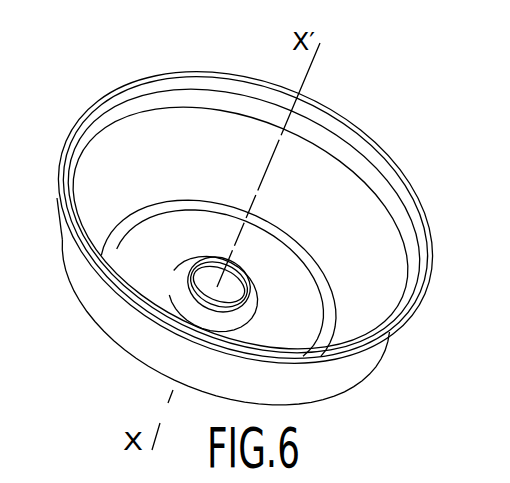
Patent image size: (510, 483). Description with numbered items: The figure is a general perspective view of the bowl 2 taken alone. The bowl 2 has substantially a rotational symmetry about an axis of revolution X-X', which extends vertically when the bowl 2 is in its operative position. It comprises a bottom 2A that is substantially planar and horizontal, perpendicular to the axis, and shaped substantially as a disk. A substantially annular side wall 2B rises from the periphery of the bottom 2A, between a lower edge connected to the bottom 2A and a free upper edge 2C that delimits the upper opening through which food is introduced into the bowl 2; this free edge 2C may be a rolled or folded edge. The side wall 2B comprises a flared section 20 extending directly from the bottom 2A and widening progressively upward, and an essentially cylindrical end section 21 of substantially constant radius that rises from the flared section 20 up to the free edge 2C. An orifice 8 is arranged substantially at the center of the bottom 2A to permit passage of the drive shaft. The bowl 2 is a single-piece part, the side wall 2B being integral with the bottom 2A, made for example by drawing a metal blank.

The bowl 2 is at (369, 123).
The bottom 2A is at (290, 303).
The side wall 2B is at (136, 337).
The free upper edge 2C is at (93, 91).
The orifice 8 is at (204, 277).
The flared section 20 is at (305, 383).
The end section 21 is at (112, 262).